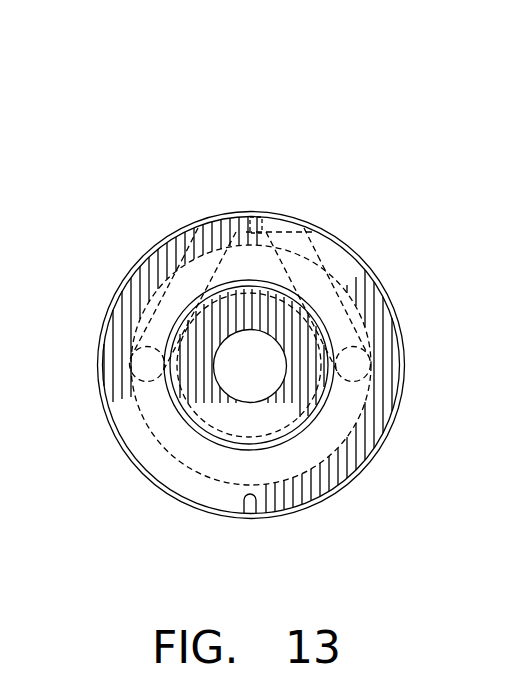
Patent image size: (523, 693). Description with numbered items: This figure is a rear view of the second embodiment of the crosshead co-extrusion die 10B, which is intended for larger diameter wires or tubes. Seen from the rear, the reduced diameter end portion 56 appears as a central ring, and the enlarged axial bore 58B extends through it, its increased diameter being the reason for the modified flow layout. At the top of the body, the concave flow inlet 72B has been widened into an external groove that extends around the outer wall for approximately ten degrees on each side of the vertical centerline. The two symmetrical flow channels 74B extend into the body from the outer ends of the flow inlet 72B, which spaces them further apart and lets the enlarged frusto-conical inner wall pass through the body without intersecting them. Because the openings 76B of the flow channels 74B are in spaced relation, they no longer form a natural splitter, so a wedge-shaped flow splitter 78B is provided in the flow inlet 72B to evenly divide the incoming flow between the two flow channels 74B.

The die 10B is at (255, 116).
The reduced diameter end portion 56 is at (200, 432).
The axial bore 58B is at (272, 393).
The concave flow inlet 72B is at (266, 216).
The flow channels 74B is at (120, 312).
The openings 76B is at (193, 218).
The wedge-shaped flow splitter 78B is at (252, 216).